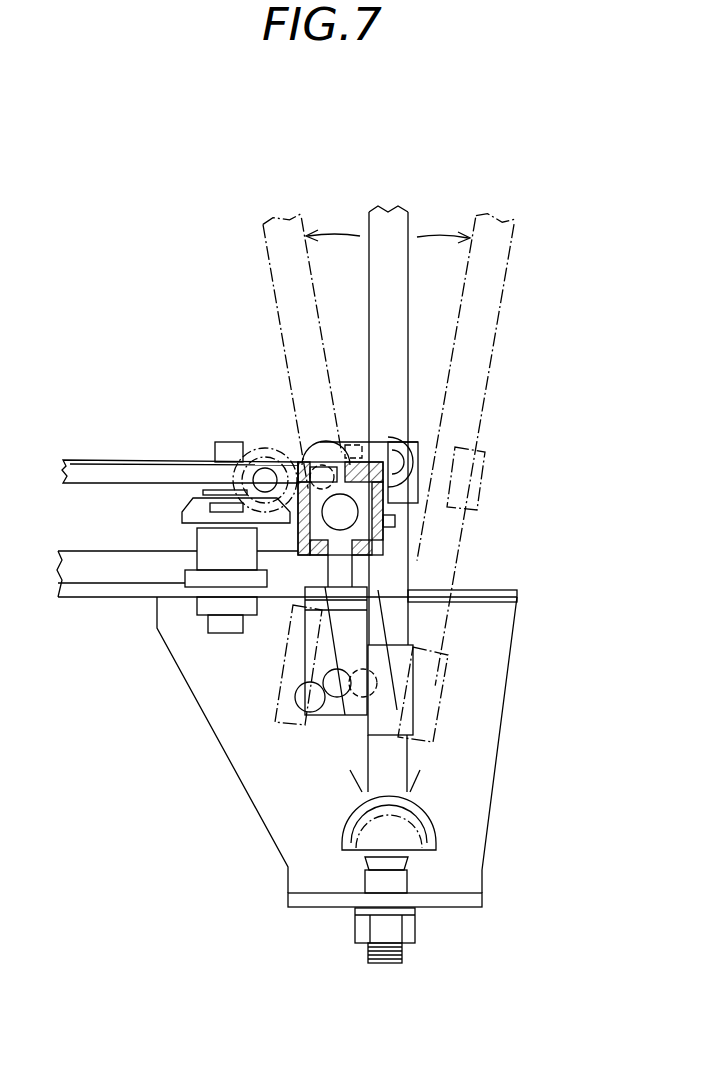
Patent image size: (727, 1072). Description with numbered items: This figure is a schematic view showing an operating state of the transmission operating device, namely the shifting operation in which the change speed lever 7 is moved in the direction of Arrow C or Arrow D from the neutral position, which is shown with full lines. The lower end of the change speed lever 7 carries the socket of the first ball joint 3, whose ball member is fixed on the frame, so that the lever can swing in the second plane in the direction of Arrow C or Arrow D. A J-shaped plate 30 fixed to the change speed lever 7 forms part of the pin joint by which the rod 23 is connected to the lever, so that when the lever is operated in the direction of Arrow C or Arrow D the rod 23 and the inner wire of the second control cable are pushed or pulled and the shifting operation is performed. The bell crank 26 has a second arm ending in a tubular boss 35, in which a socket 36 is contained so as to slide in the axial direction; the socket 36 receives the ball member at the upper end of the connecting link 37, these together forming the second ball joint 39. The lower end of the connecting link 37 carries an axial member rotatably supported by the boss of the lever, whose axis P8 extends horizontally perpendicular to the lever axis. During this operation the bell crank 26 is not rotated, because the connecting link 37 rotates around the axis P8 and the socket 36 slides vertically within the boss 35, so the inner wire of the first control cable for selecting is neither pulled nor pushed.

The change speed lever 7 is at (300, 289).
The Arrow C is at (337, 230).
The Arrow D is at (443, 232).
The rod 23 is at (83, 468).
The bell crank 26 is at (197, 515).
The J-shaped plate 30 is at (412, 448).
The tubular boss 35 is at (385, 500).
The socket 36 is at (372, 492).
The connecting link 37 is at (315, 647).
The second ball joint 39 is at (392, 537).
The axis of the boss P8 is at (385, 722).
The first ball joint 3 is at (452, 832).